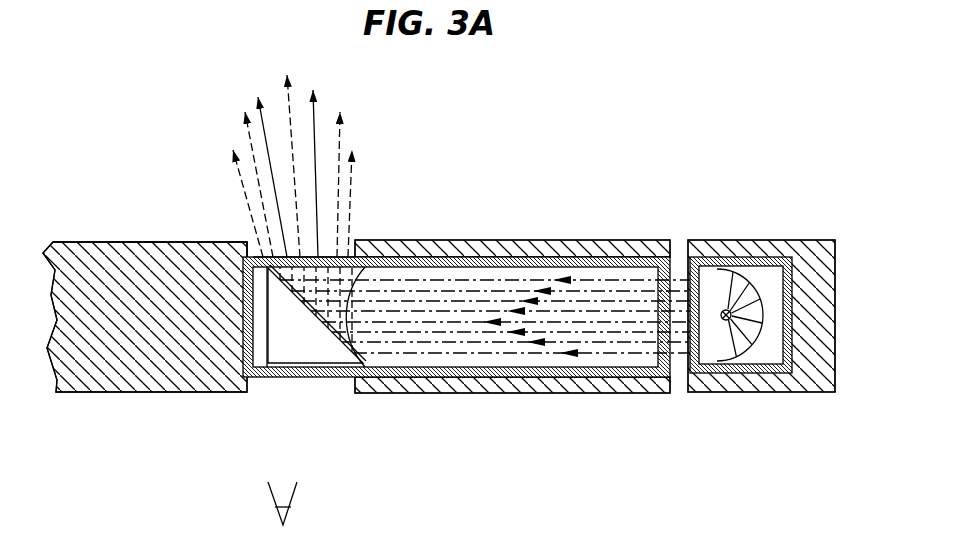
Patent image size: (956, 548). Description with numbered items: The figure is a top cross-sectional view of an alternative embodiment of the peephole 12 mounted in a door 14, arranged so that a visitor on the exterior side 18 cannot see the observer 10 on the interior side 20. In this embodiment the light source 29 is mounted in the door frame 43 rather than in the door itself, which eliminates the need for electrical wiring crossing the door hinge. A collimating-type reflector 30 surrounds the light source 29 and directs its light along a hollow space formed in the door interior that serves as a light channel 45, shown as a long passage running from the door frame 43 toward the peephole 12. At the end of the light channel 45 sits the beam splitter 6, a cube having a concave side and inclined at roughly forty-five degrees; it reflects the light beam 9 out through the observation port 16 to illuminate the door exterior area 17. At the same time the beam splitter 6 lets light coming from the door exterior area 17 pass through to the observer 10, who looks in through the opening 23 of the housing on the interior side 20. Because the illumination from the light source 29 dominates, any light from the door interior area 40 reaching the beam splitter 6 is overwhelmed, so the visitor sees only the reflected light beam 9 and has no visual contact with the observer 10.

The beam splitter 6 is at (297, 358).
The light beam 9 is at (341, 138).
The observer 10 is at (272, 497).
The peephole 12 is at (229, 229).
The door 14 is at (512, 307).
The observation port 16 is at (356, 234).
The door exterior area 17 is at (222, 93).
The exterior side 18 is at (538, 241).
The interior side 20 is at (527, 393).
The opening 23 is at (258, 397).
The light source 29 is at (727, 319).
The reflector 30 is at (729, 309).
The door interior area 40 is at (166, 508).
The door frame 43 is at (772, 392).
The light channel 45 is at (470, 268).